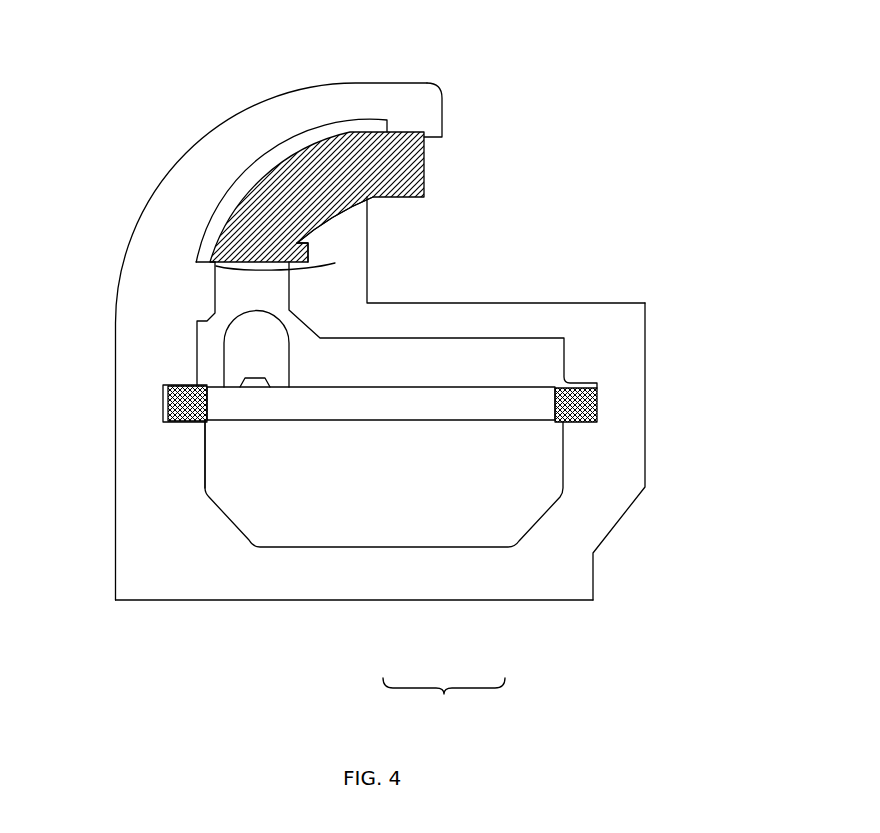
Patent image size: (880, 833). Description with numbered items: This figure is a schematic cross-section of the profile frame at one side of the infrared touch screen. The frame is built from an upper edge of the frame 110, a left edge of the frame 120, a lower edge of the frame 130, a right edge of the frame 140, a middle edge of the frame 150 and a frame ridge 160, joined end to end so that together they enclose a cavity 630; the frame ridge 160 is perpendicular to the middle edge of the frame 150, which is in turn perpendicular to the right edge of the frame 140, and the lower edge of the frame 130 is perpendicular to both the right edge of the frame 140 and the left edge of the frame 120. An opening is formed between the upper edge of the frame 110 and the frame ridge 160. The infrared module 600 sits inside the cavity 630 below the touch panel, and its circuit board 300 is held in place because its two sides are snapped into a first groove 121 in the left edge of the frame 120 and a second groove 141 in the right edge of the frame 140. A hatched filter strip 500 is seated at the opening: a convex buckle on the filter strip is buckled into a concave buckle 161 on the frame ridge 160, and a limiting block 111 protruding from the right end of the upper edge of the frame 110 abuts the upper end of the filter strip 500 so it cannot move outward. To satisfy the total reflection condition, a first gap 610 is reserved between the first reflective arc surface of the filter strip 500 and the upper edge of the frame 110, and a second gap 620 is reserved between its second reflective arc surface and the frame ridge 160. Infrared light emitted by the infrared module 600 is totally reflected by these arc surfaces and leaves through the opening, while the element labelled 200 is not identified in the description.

The upper edge of the frame 110 is at (222, 152).
The limiting block 111 is at (434, 134).
The left edge of the frame 120 is at (152, 453).
The first groove 121 is at (160, 403).
The lower edge of the frame 130 is at (278, 565).
The right edge of the frame 140 is at (608, 440).
The second groove 141 is at (600, 392).
The middle edge of the frame 150 is at (540, 298).
The frame ridge 160 is at (200, 262).
The concave buckle 161 is at (310, 252).
The boss 200 is at (257, 348).
The circuit board 300 is at (423, 403).
The filter strip 500 is at (325, 175).
The infrared module 600 is at (444, 700).
The first gap 610 is at (238, 193).
The second gap 620 is at (340, 211).
The cavity 630 is at (502, 481).